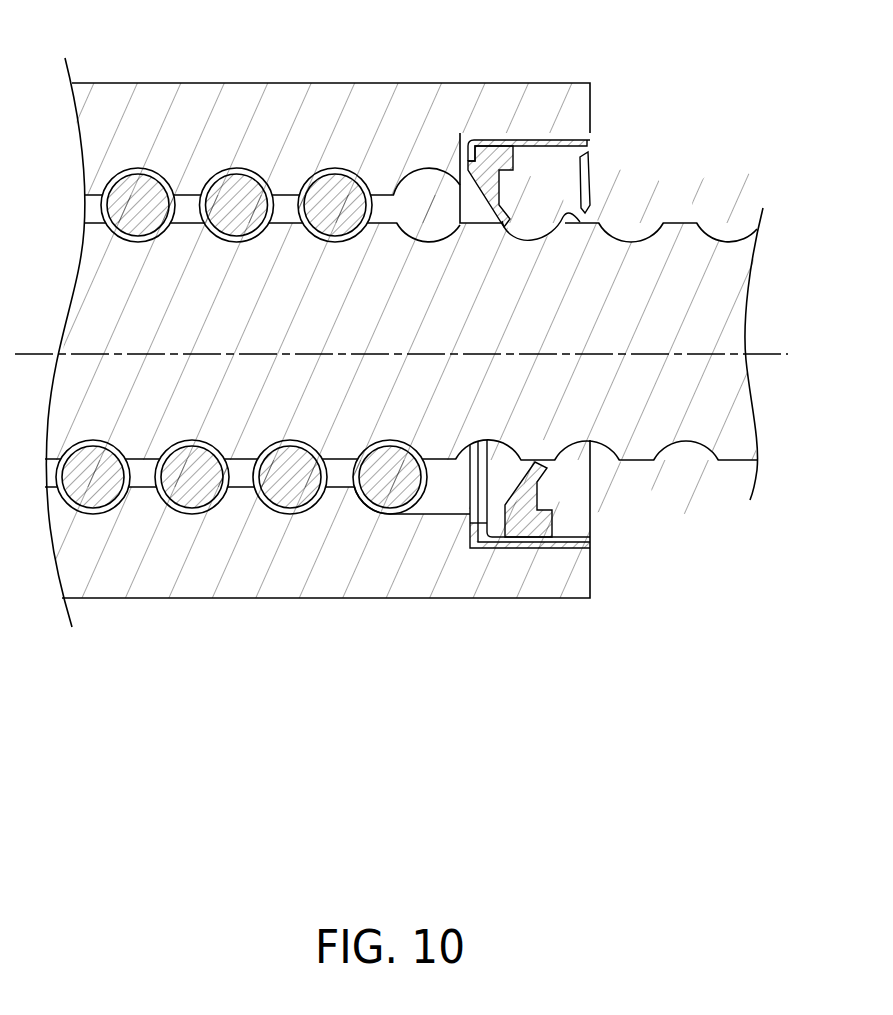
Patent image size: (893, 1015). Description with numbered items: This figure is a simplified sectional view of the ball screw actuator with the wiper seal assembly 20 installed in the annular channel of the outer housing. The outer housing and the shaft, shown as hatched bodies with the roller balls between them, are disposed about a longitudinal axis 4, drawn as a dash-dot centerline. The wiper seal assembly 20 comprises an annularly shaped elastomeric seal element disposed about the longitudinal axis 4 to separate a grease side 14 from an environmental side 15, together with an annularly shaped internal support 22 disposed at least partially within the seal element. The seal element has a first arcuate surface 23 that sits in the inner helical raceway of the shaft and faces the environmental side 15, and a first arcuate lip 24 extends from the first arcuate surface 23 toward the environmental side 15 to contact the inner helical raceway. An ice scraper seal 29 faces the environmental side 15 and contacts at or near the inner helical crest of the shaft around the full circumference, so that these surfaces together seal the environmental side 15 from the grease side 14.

The longitudinal axis 4 is at (775, 354).
The grease side 14 is at (448, 221).
The environmental side 15 is at (735, 186).
The wiper seal assembly 20 is at (641, 147).
The internal support 22 is at (570, 538).
The first arcuate surface 23 is at (552, 195).
The first arcuate lip 24 is at (532, 238).
The ice scraper seal 29 is at (588, 213).